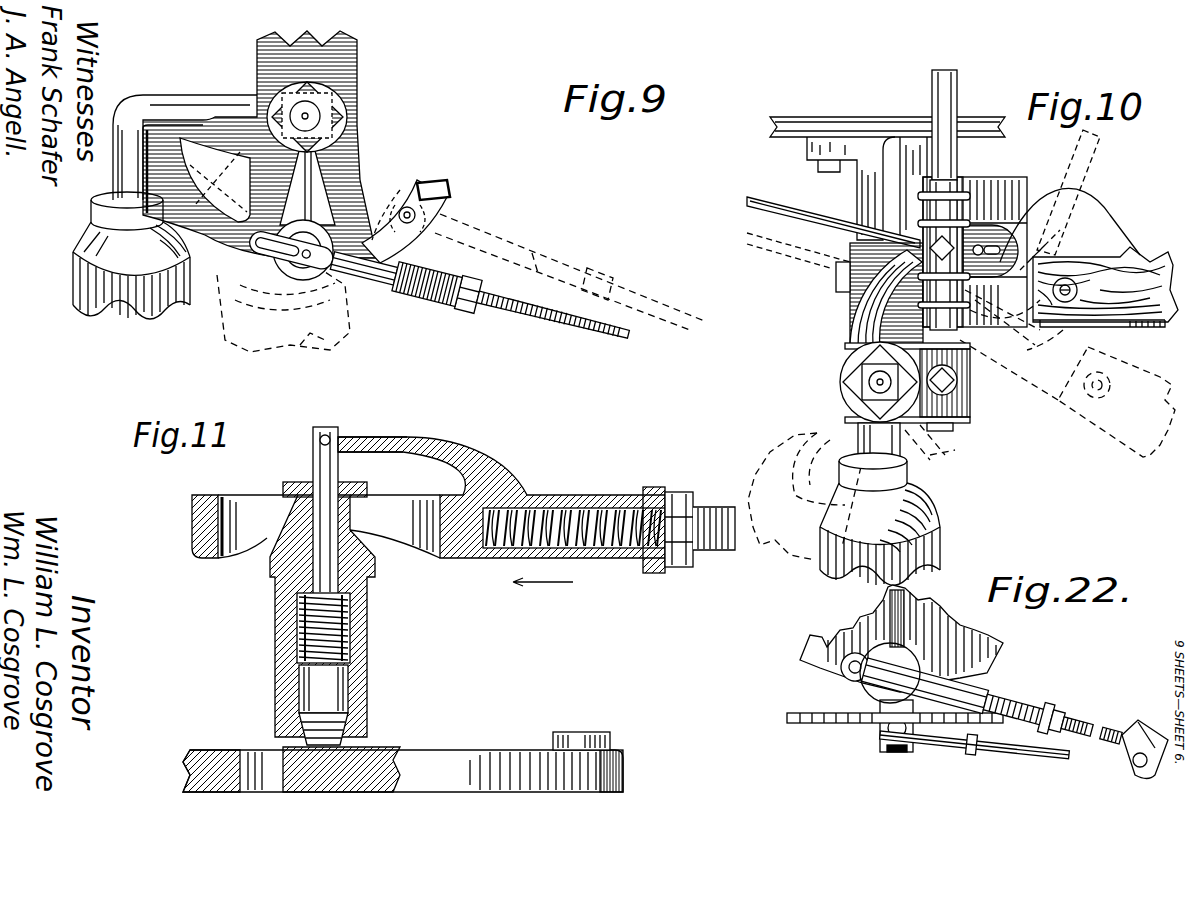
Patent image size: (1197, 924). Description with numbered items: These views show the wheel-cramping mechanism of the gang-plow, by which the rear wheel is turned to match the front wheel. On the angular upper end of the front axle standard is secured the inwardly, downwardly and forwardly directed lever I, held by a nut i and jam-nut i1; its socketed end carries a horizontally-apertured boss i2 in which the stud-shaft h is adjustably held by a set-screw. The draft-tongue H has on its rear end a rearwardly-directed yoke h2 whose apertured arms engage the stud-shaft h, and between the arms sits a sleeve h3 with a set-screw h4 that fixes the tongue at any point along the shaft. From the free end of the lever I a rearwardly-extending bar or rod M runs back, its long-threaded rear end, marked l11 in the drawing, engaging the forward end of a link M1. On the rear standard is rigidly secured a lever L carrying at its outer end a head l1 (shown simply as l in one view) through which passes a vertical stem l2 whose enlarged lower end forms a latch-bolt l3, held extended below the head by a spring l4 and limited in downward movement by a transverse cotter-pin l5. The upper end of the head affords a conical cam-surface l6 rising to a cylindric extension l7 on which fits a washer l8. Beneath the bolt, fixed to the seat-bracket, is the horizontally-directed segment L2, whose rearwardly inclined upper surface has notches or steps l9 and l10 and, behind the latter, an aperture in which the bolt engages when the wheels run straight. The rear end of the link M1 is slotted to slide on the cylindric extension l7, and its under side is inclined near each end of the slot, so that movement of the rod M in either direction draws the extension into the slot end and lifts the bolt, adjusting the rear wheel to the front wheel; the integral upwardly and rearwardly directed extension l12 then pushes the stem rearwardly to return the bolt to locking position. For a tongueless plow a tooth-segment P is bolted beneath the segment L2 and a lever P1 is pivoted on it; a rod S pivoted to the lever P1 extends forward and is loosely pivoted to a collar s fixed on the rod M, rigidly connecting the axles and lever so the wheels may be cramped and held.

In FIG. 9, the stem of lever l is at (353, 117).
In FIG. 9, the lever L is at (363, 157).
In FIG. 9, the segment L2 is at (375, 205).
In FIG. 11, the segment L2 is at (612, 770).
In FIG. 22, the segment L2 is at (815, 660).
In FIG. 9, the notch or step l9 is at (451, 186).
In FIG. 11, the notch or step l9 is at (600, 746).
In FIG. 9, the conical cam-surface l6 is at (326, 268).
In FIG. 11, the conical cam-surface l6 is at (270, 553).
In FIG. 9, the stem l2 is at (305, 260).
In FIG. 11, the stem l2 is at (311, 470).
In FIG. 9, the link M1 is at (447, 292).
In FIG. 11, the link M1 is at (605, 563).
In FIG. 22, the link M1 is at (1023, 703).
In FIG. 9, the extension l12 is at (432, 278).
In FIG. 11, the extension l12 is at (372, 436).
In FIG. 22, the extension l12 is at (968, 690).
In FIG. 9, the threaded rod l11 is at (553, 310).
In FIG. 10, the stud-shaft h is at (962, 88).
In FIG. 10, the sleeve h3 is at (940, 235).
In FIG. 10, the set-screw h4 is at (980, 243).
In FIG. 10, the yoke h2 is at (1083, 228).
In FIG. 10, the draft-tongue H is at (1140, 260).
In FIG. 10, the bar or rod M is at (760, 199).
In FIG. 11, the bar or rod M is at (725, 552).
In FIG. 22, the bar or rod M is at (1078, 717).
In FIG. 10, the lever I is at (848, 318).
In FIG. 10, the nut i is at (841, 383).
In FIG. 10, the jam-nut i1 is at (853, 400).
In FIG. 10, the boss i2 is at (963, 410).
In FIG. 11, the cotter-pin l5 is at (328, 428).
In FIG. 11, the washer l8 is at (402, 442).
In FIG. 11, the cylindric extension l7 is at (345, 517).
In FIG. 11, the head l1 is at (345, 628).
In FIG. 11, the spring l4 is at (296, 633).
In FIG. 11, the latch-bolt l3 is at (332, 700).
In FIG. 11, the notch or step l10 is at (300, 745).
In FIG. 22, the tooth-segment P is at (877, 702).
In FIG. 22, the lever P1 is at (897, 732).
In FIG. 22, the rod S is at (1005, 753).
In FIG. 22, the collar s is at (1140, 735).